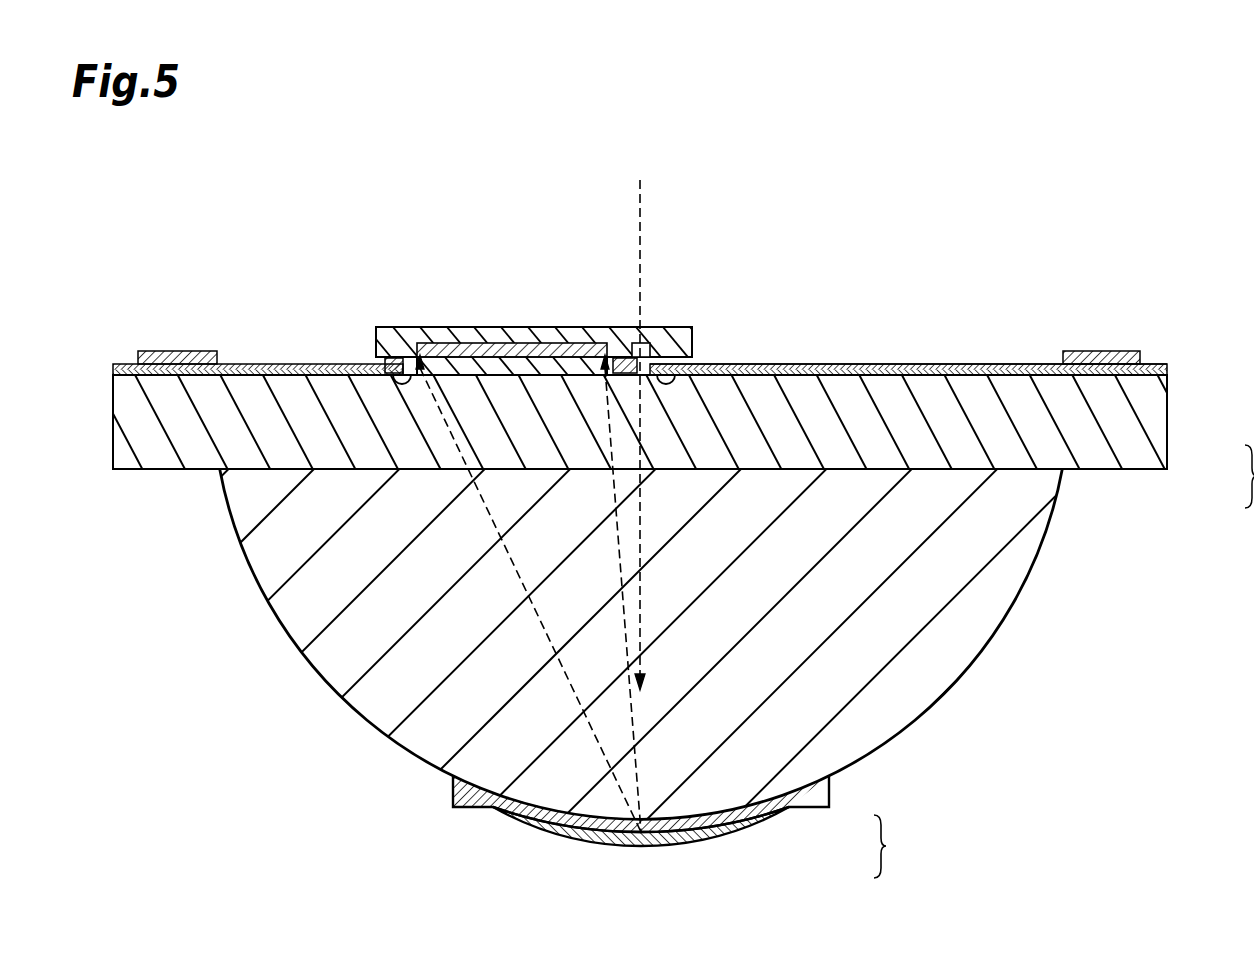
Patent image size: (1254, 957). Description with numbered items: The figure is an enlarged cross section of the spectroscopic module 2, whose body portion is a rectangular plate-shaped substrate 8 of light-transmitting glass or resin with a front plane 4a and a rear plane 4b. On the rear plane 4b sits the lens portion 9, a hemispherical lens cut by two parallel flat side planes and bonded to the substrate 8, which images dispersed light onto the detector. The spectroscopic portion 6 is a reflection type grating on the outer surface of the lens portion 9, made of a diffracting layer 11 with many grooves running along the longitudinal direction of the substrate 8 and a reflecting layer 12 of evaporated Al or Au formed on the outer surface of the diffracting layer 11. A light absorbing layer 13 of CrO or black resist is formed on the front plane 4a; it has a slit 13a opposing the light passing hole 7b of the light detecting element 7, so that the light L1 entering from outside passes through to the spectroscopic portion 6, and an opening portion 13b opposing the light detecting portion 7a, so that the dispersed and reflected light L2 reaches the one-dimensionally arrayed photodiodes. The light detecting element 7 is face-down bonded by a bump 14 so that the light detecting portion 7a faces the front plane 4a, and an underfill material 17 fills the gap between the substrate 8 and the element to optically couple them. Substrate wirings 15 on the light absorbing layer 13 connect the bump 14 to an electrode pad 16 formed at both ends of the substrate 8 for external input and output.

The spectroscopic module 2 is at (925, 225).
The front plane 4a is at (1149, 364).
The rear plane 4b is at (1110, 470).
The spectroscopic portion 6 is at (888, 846).
The light detecting element 7 is at (490, 327).
The light detecting portion 7a is at (528, 343).
The light passing hole 7b is at (644, 342).
The substrate 8 is at (1158, 445).
The lens portion 9 is at (1007, 593).
The diffracting layer 11 is at (777, 807).
The reflecting layer 12 is at (742, 831).
The light absorbing layer 13 is at (928, 363).
The slit 13a is at (697, 362).
The opening portion 13b is at (380, 361).
The bump 14 is at (388, 357).
The substrate wiring 15 is at (848, 363).
The electrode pad 16 is at (181, 350).
The underfill material 17 is at (583, 357).
The light L1 is at (643, 215).
The dispersed light L2 is at (622, 562).